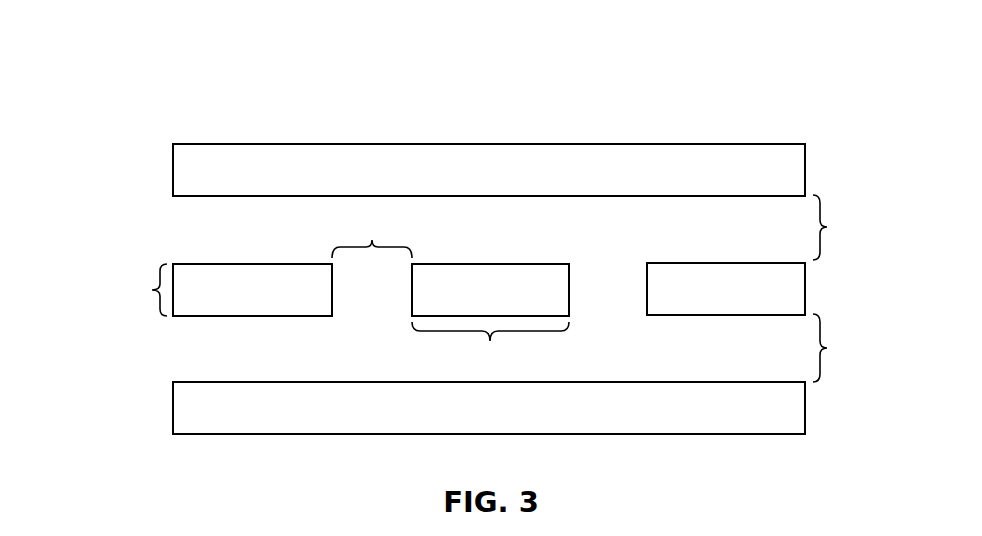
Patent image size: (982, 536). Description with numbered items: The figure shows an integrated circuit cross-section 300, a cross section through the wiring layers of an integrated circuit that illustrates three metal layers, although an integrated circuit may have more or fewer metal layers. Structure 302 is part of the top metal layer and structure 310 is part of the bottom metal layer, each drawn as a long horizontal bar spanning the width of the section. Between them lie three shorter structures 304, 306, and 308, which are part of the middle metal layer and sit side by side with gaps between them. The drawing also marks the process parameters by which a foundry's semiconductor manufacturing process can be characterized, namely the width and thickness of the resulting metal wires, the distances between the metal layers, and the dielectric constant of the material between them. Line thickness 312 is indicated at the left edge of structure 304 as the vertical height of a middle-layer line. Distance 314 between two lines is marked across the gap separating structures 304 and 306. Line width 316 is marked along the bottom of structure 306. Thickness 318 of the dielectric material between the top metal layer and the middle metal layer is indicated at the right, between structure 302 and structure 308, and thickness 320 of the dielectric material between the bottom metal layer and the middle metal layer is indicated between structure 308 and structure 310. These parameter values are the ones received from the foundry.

The integrated circuit cross-section 300 is at (245, 38).
The structure 302 is at (489, 170).
The structure 304 is at (252, 290).
The structure 306 is at (490, 290).
The structure 308 is at (726, 289).
The structure 310 is at (489, 408).
The line thickness 312 is at (136, 290).
The distance between two lines 314 is at (372, 238).
The line width 316 is at (490, 343).
The thickness of the dielectric material 318 is at (843, 227).
The thickness of the dielectric material 320 is at (843, 348).